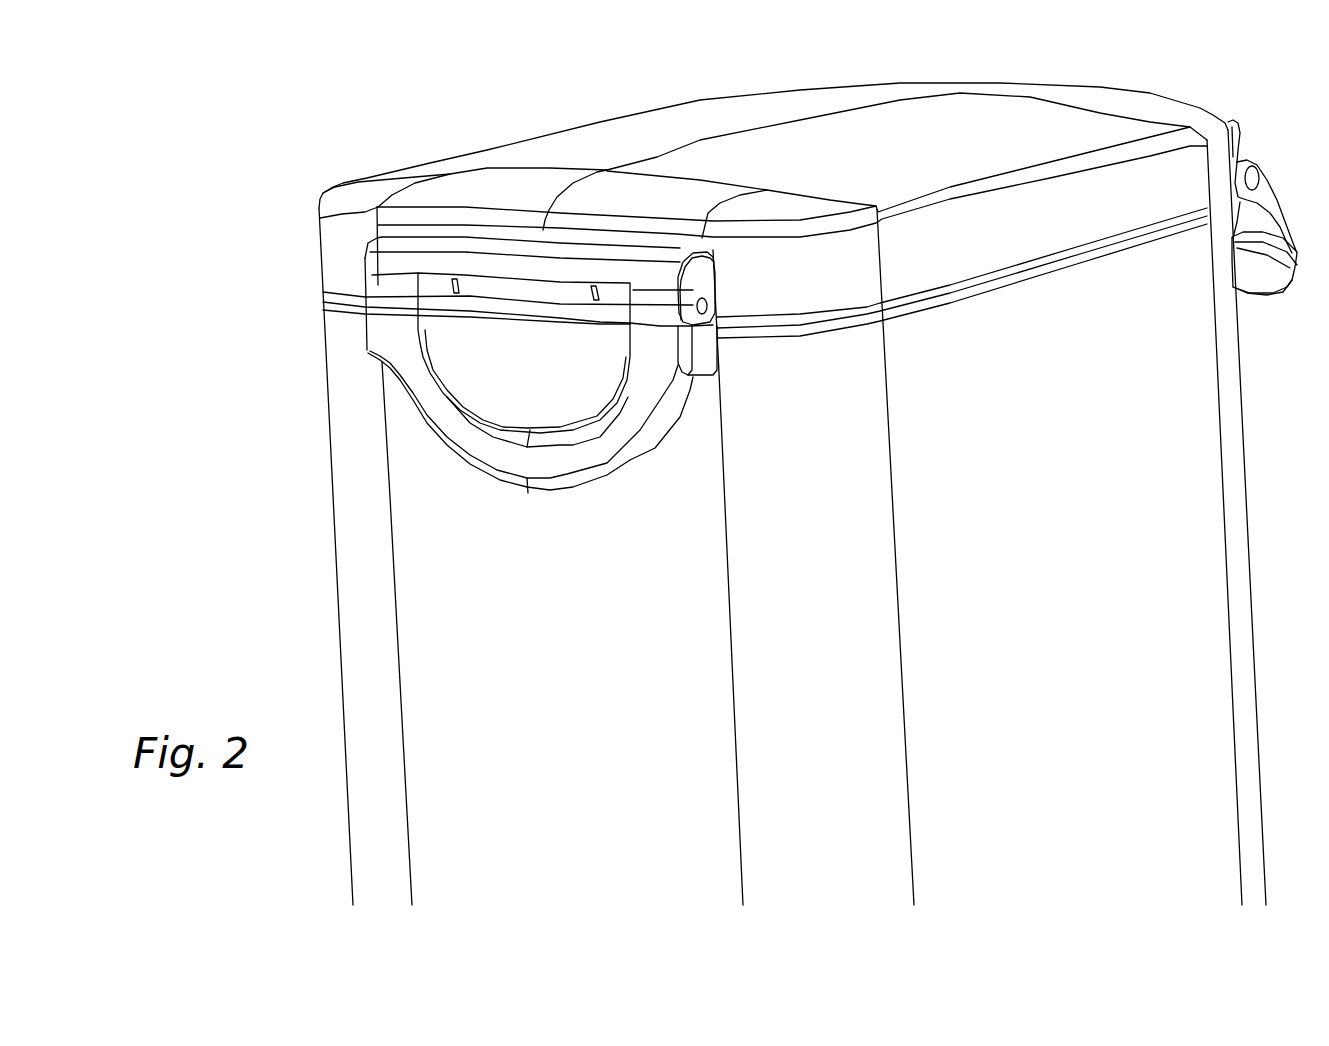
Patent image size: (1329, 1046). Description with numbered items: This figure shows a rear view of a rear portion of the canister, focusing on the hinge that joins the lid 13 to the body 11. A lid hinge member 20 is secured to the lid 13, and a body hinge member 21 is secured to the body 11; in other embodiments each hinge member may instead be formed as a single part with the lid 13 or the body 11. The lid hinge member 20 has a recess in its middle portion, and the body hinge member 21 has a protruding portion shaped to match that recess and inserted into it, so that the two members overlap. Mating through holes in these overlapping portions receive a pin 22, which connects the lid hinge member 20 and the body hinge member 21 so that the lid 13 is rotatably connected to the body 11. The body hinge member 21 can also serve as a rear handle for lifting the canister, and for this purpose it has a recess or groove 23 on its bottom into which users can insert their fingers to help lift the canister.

The body 11 is at (728, 517).
The lid 13 is at (773, 143).
The lid hinge member 20 is at (451, 259).
The body hinge member 21 is at (407, 360).
The pin 22 is at (647, 185).
The recess or groove 23 is at (530, 471).